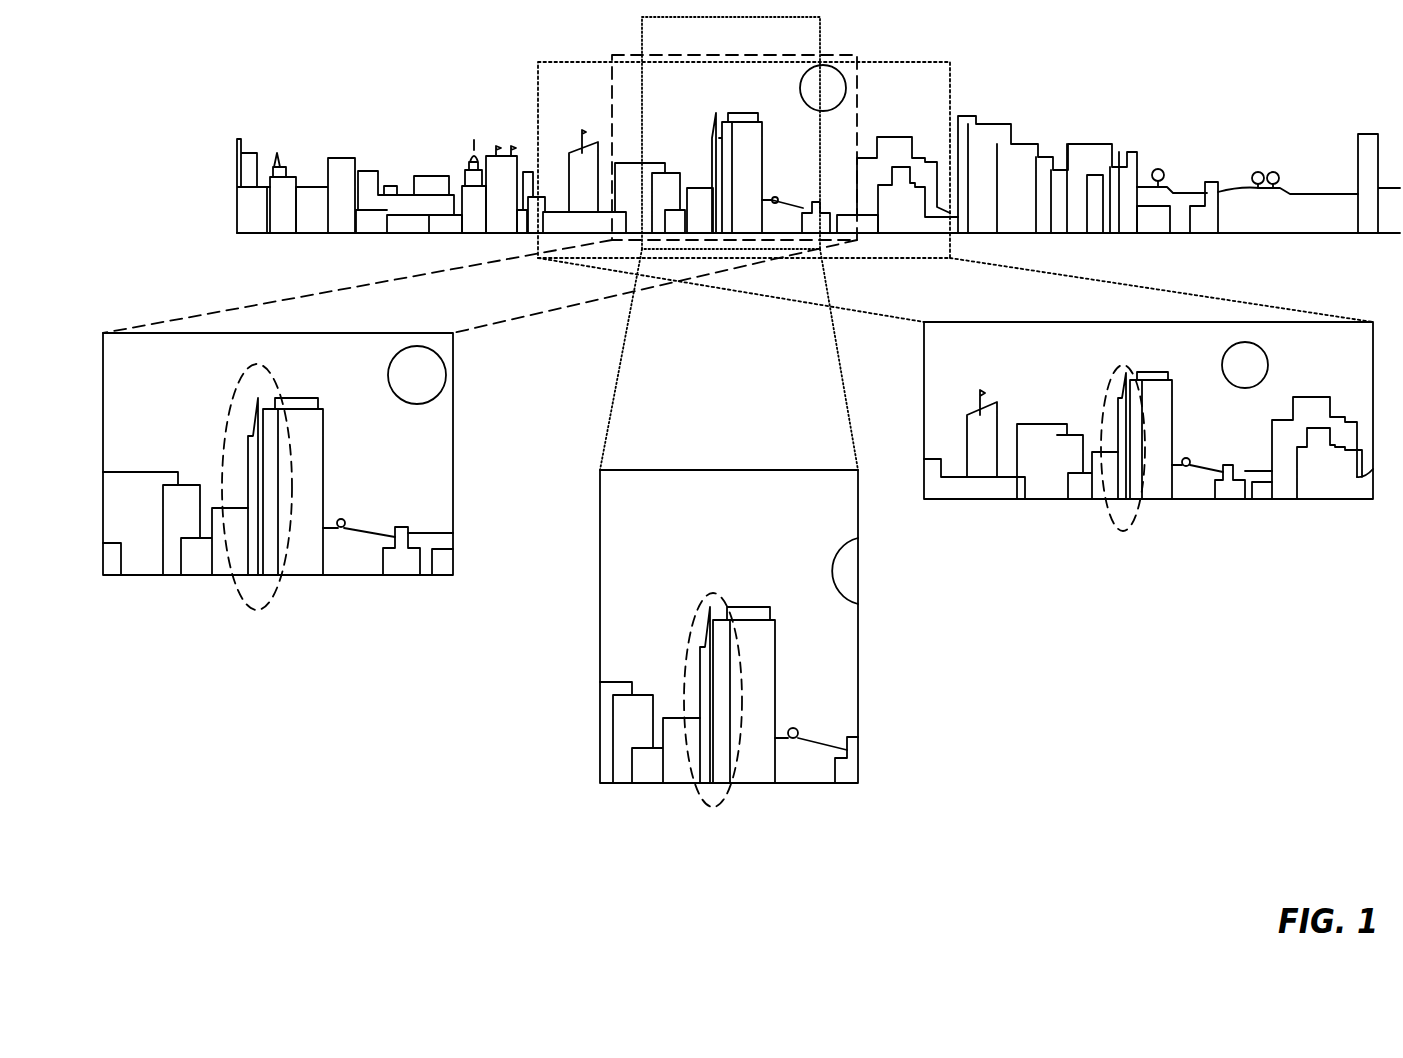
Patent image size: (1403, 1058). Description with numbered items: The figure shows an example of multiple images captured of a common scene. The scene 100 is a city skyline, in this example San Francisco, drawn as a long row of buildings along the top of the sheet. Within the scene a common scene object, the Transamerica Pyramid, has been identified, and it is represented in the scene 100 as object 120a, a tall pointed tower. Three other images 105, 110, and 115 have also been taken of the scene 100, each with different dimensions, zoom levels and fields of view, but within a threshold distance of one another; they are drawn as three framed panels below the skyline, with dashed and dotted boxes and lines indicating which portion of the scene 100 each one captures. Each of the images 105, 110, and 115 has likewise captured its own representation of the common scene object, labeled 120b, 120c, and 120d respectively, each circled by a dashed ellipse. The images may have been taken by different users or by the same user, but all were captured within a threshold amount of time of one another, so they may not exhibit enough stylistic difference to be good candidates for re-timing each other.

The scene 100 is at (186, 156).
The image 105 is at (170, 578).
The image 110 is at (672, 785).
The image 115 is at (1017, 500).
The object 120a is at (710, 120).
The representation of common scene object 120b is at (258, 616).
The representation of common scene object 120c is at (722, 806).
The representation of common scene object 120d is at (1127, 524).